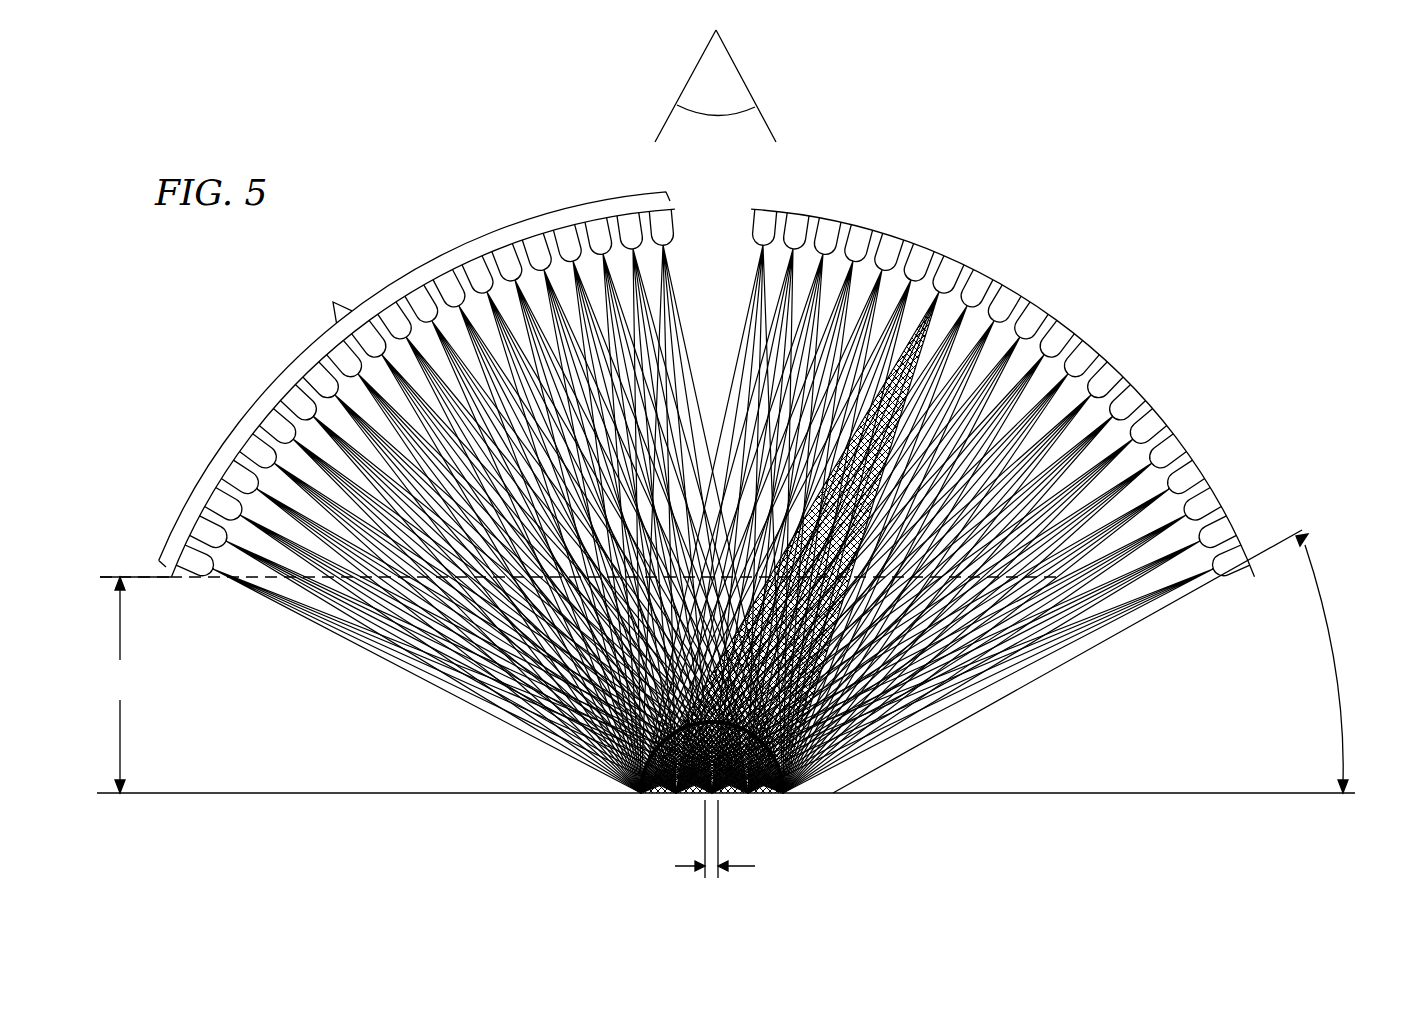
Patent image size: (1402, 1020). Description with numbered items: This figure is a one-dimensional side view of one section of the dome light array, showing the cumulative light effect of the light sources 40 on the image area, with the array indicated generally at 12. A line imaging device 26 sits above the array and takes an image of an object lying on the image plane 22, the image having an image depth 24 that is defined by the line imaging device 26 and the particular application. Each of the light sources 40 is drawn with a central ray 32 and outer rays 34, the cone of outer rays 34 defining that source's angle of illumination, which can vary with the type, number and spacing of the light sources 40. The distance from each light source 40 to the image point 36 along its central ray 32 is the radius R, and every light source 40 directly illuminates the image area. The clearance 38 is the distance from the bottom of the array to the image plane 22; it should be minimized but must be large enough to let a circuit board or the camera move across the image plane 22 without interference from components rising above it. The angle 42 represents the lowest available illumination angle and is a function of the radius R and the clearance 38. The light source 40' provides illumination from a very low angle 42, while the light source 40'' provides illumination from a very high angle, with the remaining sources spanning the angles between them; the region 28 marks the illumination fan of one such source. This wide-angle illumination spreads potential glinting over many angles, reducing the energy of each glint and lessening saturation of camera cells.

The scanning system / LED array 12 is at (719, 214).
The image plane 22 is at (510, 796).
The image depth 24 is at (802, 840).
The line imaging device 26 is at (742, 73).
The illumination fan of one LED 28 is at (953, 292).
The central ray 32 is at (1120, 615).
The outer rays 34 is at (1077, 612).
The image point 36 is at (720, 797).
The clearance distance 38 is at (578, 685).
The light sources 40 is at (417, 385).
The light source 40' is at (1257, 538).
The light source 40'' is at (794, 192).
The angle of illumination 42 is at (1090, 661).
The radius R is at (310, 620).